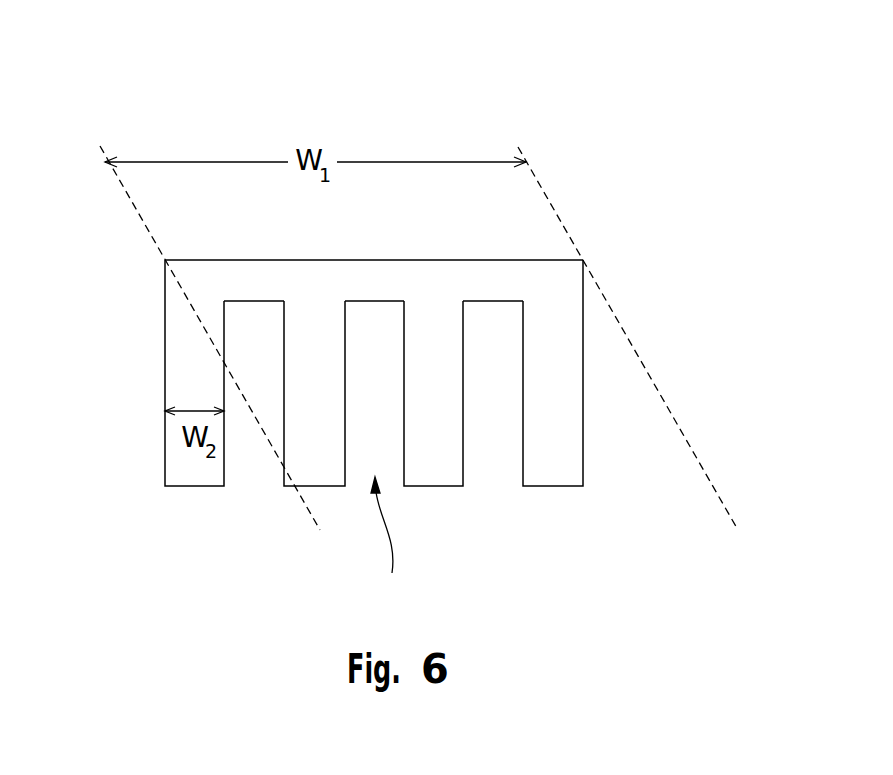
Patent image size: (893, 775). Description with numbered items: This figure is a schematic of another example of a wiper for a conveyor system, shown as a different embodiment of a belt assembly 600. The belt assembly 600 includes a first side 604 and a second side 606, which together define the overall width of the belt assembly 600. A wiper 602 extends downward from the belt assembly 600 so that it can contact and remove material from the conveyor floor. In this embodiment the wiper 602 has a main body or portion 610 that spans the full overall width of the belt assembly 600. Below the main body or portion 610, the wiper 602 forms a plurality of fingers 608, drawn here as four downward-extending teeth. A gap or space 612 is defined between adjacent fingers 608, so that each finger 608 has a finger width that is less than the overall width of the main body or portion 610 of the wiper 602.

The belt assembly 600 is at (413, 317).
The wiper 602 is at (398, 285).
The first side 604 is at (116, 181).
The second side 606 is at (548, 193).
The fingers 608 is at (213, 487).
The main body or portion 610 is at (255, 283).
The gap or space 612 is at (390, 544).